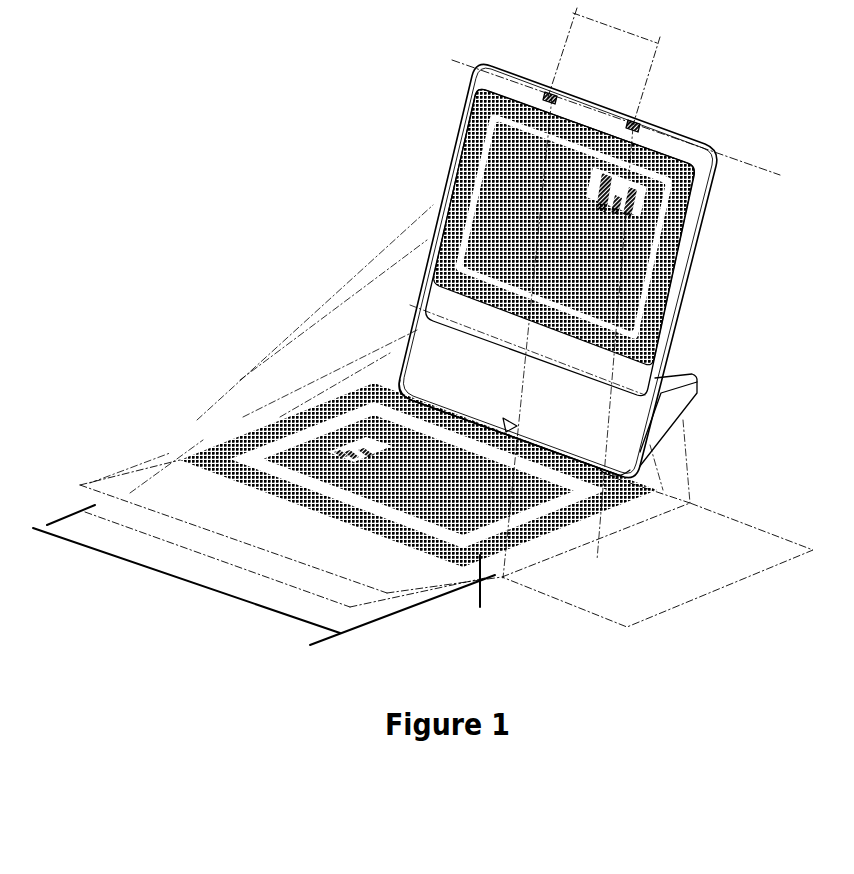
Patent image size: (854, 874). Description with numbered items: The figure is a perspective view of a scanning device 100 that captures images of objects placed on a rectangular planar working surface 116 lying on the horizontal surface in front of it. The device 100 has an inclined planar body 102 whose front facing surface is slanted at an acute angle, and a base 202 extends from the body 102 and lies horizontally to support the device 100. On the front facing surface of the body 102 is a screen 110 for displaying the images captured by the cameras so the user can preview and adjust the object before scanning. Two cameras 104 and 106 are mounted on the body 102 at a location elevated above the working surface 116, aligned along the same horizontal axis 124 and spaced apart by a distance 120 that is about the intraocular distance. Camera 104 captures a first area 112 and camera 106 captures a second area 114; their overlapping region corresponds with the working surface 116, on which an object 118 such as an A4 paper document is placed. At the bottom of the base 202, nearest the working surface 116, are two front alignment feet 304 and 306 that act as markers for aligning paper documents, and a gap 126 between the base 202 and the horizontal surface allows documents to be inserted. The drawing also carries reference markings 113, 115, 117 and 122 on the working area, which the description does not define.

The device 100 is at (364, 184).
The body 102 is at (472, 78).
The camera 104 is at (548, 90).
The camera 106 is at (635, 123).
The screen 110 is at (688, 207).
The first area 112 is at (202, 447).
The base plate 113 is at (302, 562).
The second area 114 is at (638, 508).
The base length dimension 115 is at (117, 552).
The working surface 116 is at (480, 595).
The base width dimension 117 is at (303, 588).
The object 118 is at (282, 467).
The distance l 120 is at (610, 32).
The extension area 122 is at (720, 582).
The horizontal axis 124 is at (468, 63).
The gap 126 is at (543, 450).
The base 202 is at (687, 377).
The front alignment foot 304 is at (423, 407).
The front alignment foot 306 is at (593, 468).